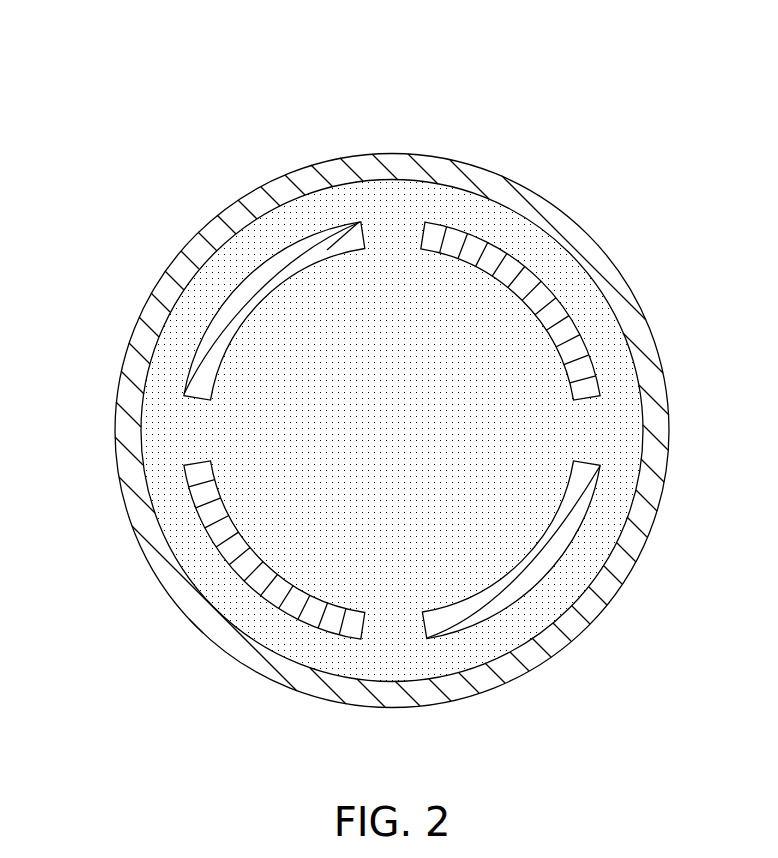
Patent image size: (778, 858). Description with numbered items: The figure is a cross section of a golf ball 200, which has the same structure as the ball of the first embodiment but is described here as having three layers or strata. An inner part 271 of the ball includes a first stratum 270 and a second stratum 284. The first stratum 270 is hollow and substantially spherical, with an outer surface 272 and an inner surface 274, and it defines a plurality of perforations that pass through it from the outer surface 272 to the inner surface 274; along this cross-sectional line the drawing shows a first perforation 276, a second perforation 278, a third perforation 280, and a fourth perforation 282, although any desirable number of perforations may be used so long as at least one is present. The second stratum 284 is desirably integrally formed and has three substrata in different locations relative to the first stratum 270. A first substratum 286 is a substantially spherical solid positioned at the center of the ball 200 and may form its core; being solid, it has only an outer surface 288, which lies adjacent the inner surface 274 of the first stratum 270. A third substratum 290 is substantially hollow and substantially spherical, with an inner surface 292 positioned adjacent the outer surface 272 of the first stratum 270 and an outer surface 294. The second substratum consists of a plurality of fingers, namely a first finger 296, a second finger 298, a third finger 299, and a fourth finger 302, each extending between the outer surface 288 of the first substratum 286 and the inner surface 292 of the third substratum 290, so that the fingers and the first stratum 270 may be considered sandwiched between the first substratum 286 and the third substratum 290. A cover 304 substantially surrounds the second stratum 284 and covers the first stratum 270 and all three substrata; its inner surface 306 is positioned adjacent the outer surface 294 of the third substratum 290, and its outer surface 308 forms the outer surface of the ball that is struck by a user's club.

The ball 200 is at (206, 113).
The first stratum 270 is at (533, 280).
The inner part 271 is at (509, 532).
The outer surface 272 is at (577, 320).
The inner surface 274 is at (449, 250).
The first perforation 276 is at (422, 226).
The second perforation 278 is at (190, 461).
The third perforation 280 is at (362, 630).
The fourth perforation 282 is at (593, 462).
The second stratum 284 is at (513, 624).
The first substratum 286 is at (370, 435).
The outer surface 288 is at (228, 335).
The third substratum 290 is at (253, 233).
The inner surface 292 is at (247, 282).
The outer surface 294 is at (160, 332).
The first finger 296 is at (393, 227).
The second finger 298 is at (190, 427).
The third finger 299 is at (398, 633).
The fourth finger 302 is at (593, 428).
The cover 304 is at (527, 198).
The inner surface 306 is at (320, 190).
The outer surface 308 is at (640, 545).